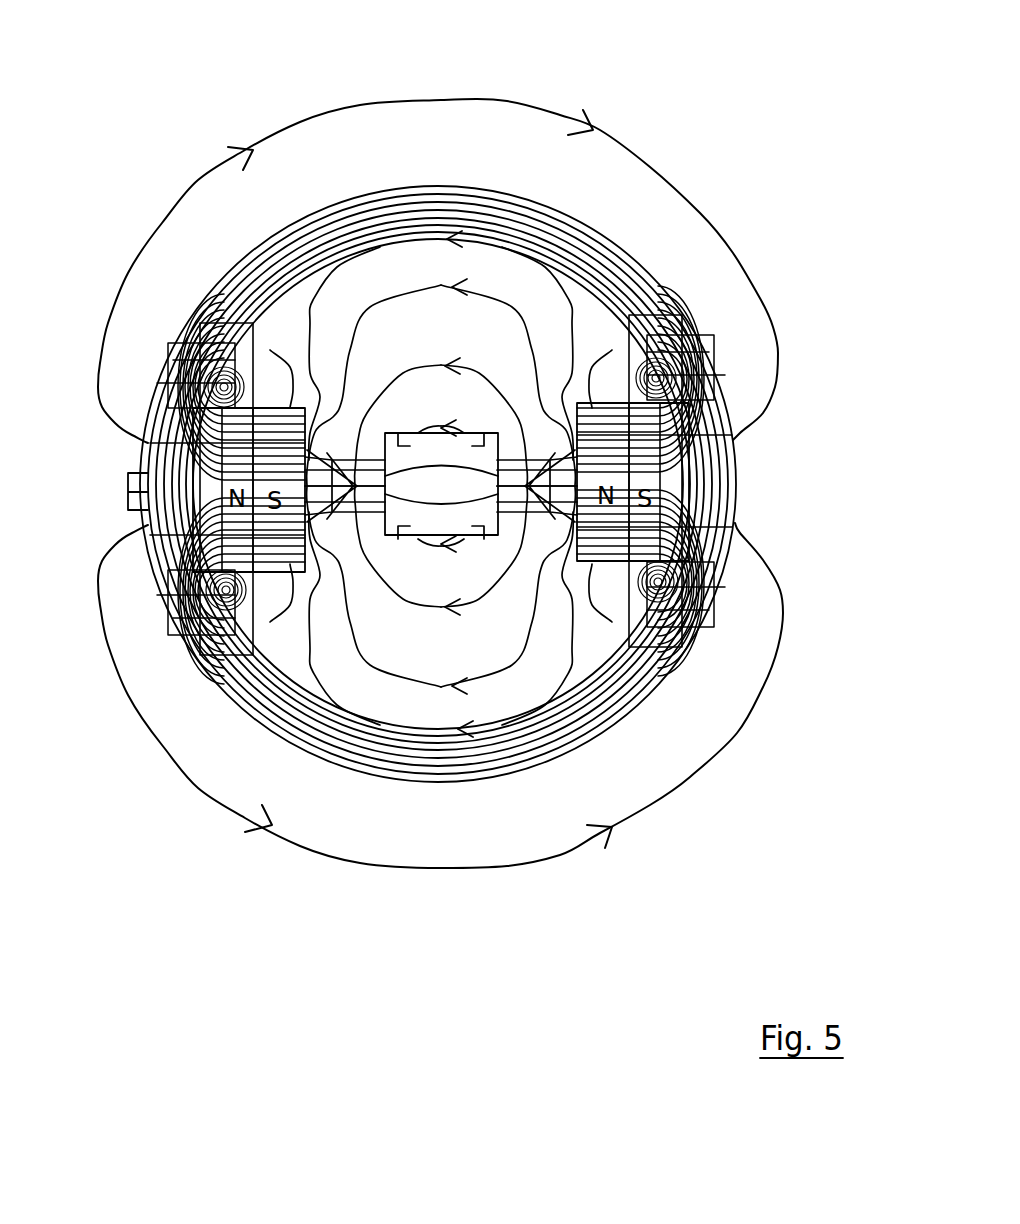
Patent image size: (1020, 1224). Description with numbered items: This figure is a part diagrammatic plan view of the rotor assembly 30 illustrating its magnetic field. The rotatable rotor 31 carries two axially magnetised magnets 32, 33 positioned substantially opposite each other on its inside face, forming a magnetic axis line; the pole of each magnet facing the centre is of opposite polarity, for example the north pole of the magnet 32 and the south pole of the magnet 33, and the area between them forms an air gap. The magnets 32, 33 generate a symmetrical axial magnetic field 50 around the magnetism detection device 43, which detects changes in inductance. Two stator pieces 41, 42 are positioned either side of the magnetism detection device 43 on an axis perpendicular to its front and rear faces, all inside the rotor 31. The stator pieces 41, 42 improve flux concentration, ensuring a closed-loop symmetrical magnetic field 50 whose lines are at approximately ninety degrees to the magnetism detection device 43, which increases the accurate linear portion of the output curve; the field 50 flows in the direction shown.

The rotor assembly 30 is at (150, 196).
The rotor 31 is at (613, 277).
The magnet 32 is at (720, 477).
The magnet 33 is at (165, 531).
The stator piece 41 is at (585, 428).
The stator piece 42 is at (146, 446).
The magnetism detection device 43 is at (493, 433).
The axial magnetic field 50 is at (507, 101).